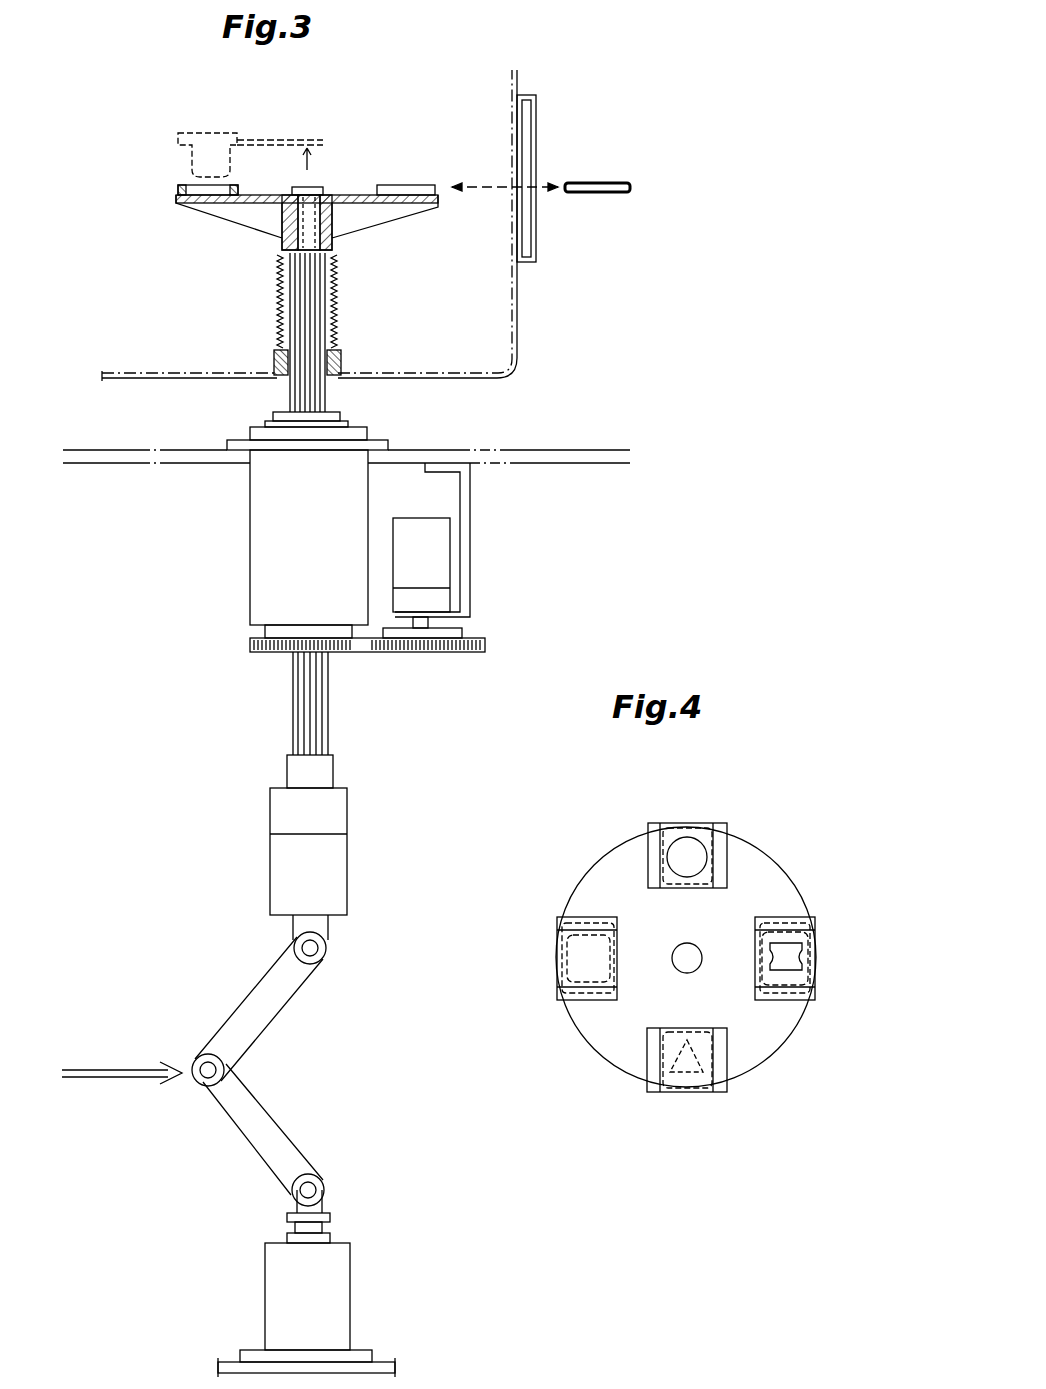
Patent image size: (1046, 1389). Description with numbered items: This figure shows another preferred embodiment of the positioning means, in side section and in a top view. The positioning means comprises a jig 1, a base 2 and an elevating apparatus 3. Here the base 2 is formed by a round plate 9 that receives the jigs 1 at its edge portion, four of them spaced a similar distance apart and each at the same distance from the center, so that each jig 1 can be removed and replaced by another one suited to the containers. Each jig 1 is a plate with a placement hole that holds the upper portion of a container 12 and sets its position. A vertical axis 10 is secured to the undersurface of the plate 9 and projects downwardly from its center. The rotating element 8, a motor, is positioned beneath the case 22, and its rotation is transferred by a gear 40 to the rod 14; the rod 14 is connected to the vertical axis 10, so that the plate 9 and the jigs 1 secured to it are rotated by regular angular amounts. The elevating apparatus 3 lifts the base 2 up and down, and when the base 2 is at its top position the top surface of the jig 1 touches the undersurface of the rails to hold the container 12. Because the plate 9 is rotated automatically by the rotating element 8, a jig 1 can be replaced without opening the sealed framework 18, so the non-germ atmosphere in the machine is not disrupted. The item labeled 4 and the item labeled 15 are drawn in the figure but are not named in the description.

In FIG. 3, the jig 1 is at (405, 185).
In FIG. 4, the jig 1 is at (562, 958).
In FIG. 3, the base 2 is at (352, 269).
In FIG. 3, the elevating apparatus 3 is at (210, 1121).
In FIG. 4, the workpiece holder 4 is at (688, 840).
In FIG. 3, the rotating element 8 is at (437, 555).
In FIG. 3, the plate 9 is at (352, 195).
In FIG. 4, the plate 9 is at (617, 1052).
In FIG. 3, the vertical axis 10 is at (284, 226).
In FIG. 4, the vertical axis 10 is at (692, 953).
In FIG. 3, the container 12 is at (190, 165).
In FIG. 3, the rod 14 is at (330, 719).
In FIG. 3, the motor 15 is at (258, 502).
In FIG. 3, the sealed framework 18 is at (465, 380).
In FIG. 3, the case 22 is at (537, 465).
In FIG. 3, the gear 40 is at (270, 654).